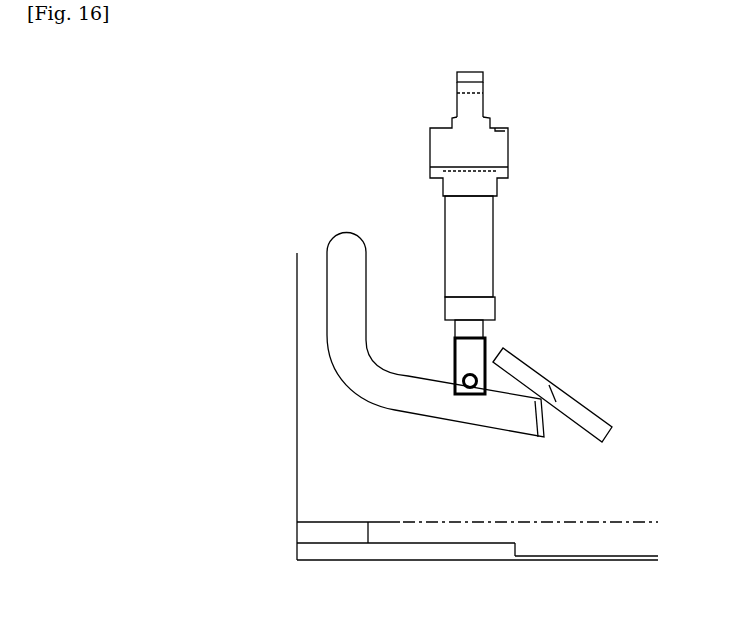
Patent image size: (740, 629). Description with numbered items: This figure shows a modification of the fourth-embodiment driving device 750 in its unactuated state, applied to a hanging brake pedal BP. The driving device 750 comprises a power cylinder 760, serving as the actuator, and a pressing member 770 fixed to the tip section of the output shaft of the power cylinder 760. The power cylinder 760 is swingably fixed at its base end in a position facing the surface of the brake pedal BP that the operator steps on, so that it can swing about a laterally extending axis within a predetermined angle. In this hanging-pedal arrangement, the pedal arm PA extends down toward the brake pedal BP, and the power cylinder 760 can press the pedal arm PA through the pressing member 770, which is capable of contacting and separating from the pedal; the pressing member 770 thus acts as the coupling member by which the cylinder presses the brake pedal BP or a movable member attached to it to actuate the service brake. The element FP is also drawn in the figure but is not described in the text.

The driving device 750 is at (431, 284).
The power cylinder 760 is at (493, 229).
The pressing member 770 is at (470, 394).
The pedal arm PA is at (327, 337).
The brake pedal BP is at (538, 373).
The floor plate FP is at (619, 556).